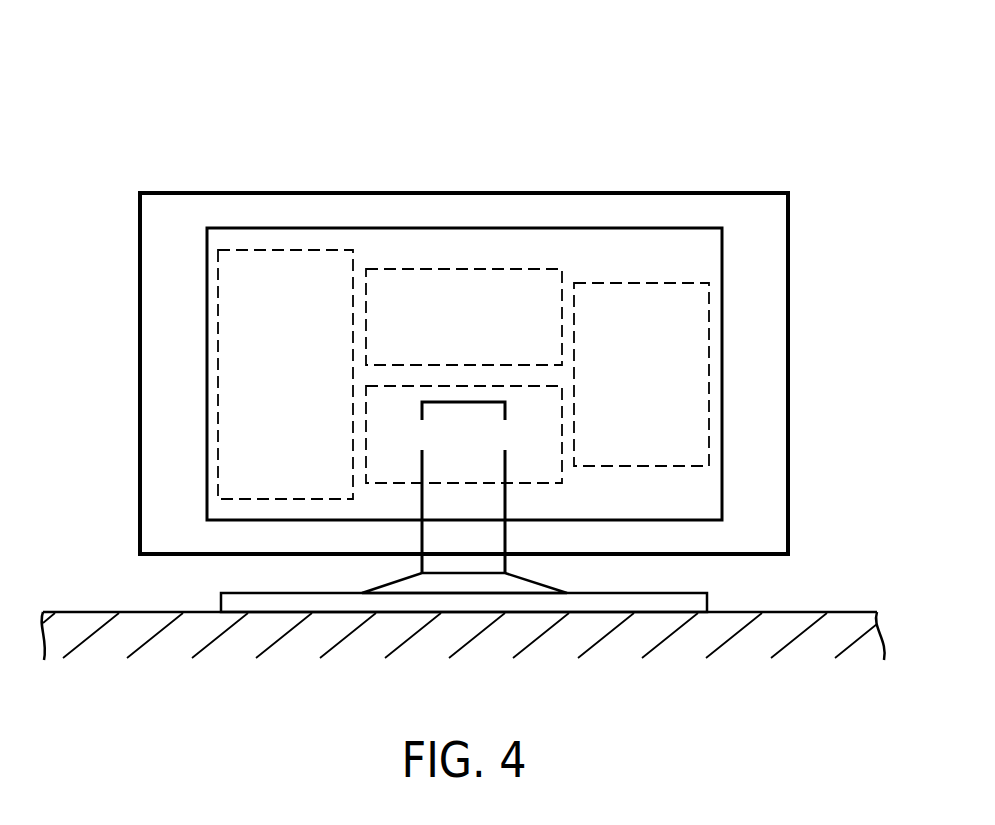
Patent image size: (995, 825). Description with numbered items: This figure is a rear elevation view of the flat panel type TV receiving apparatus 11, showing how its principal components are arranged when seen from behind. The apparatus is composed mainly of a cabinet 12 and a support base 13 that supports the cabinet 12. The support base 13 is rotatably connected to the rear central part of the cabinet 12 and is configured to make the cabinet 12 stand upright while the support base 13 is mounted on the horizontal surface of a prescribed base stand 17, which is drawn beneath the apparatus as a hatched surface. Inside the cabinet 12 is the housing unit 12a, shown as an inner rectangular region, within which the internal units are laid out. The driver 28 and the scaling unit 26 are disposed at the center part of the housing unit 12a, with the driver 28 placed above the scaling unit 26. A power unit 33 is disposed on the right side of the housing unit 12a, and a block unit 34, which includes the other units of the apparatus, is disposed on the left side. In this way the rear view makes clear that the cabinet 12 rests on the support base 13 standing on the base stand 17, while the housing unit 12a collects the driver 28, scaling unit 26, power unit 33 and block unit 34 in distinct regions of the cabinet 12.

The TV receiving apparatus 11 is at (688, 143).
The cabinet 12 is at (772, 193).
The housing unit 12a is at (585, 228).
The support base 13 is at (676, 592).
The base stand 17 is at (843, 610).
The scaling unit 26 is at (562, 470).
The driver 28 is at (432, 268).
The power unit 33 is at (709, 335).
The block unit 34 is at (218, 333).